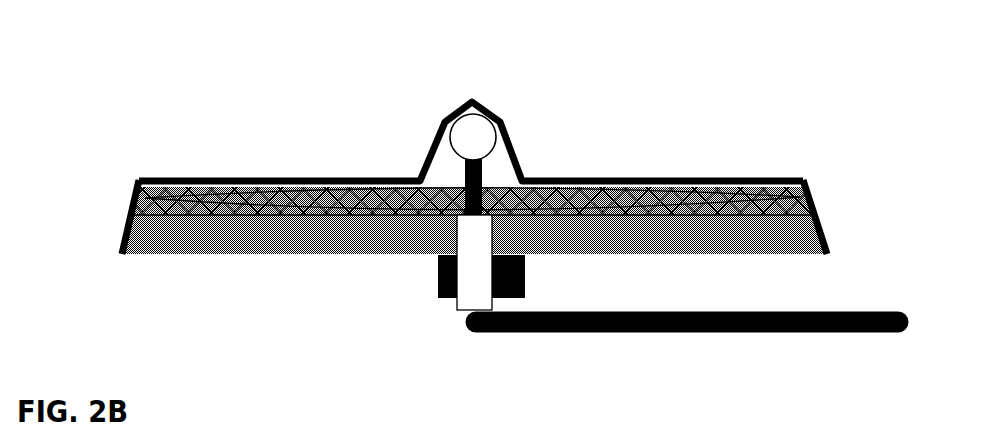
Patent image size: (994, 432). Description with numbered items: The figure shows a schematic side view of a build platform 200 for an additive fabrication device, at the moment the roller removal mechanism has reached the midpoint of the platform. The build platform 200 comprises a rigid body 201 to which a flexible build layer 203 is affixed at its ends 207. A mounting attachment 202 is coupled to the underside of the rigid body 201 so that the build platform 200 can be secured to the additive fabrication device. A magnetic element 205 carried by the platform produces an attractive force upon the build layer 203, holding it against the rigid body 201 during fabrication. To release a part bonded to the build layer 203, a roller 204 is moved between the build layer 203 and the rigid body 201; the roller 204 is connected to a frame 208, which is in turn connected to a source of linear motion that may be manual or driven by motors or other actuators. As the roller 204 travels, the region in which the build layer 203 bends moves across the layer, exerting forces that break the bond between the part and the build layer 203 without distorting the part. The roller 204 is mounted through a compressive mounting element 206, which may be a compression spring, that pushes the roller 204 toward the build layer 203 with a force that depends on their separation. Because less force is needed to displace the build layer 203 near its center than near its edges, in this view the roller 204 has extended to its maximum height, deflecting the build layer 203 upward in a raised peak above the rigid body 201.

The build platform 200 is at (862, 58).
The rigid body 201 is at (665, 235).
The mounting attachment 202 is at (507, 275).
The build layer 203 is at (605, 175).
The roller 204 is at (473, 137).
The magnetic element 205 is at (302, 205).
The compressive mounting element 206 is at (475, 283).
The ends 207 is at (122, 230).
The frame 208 is at (697, 323).